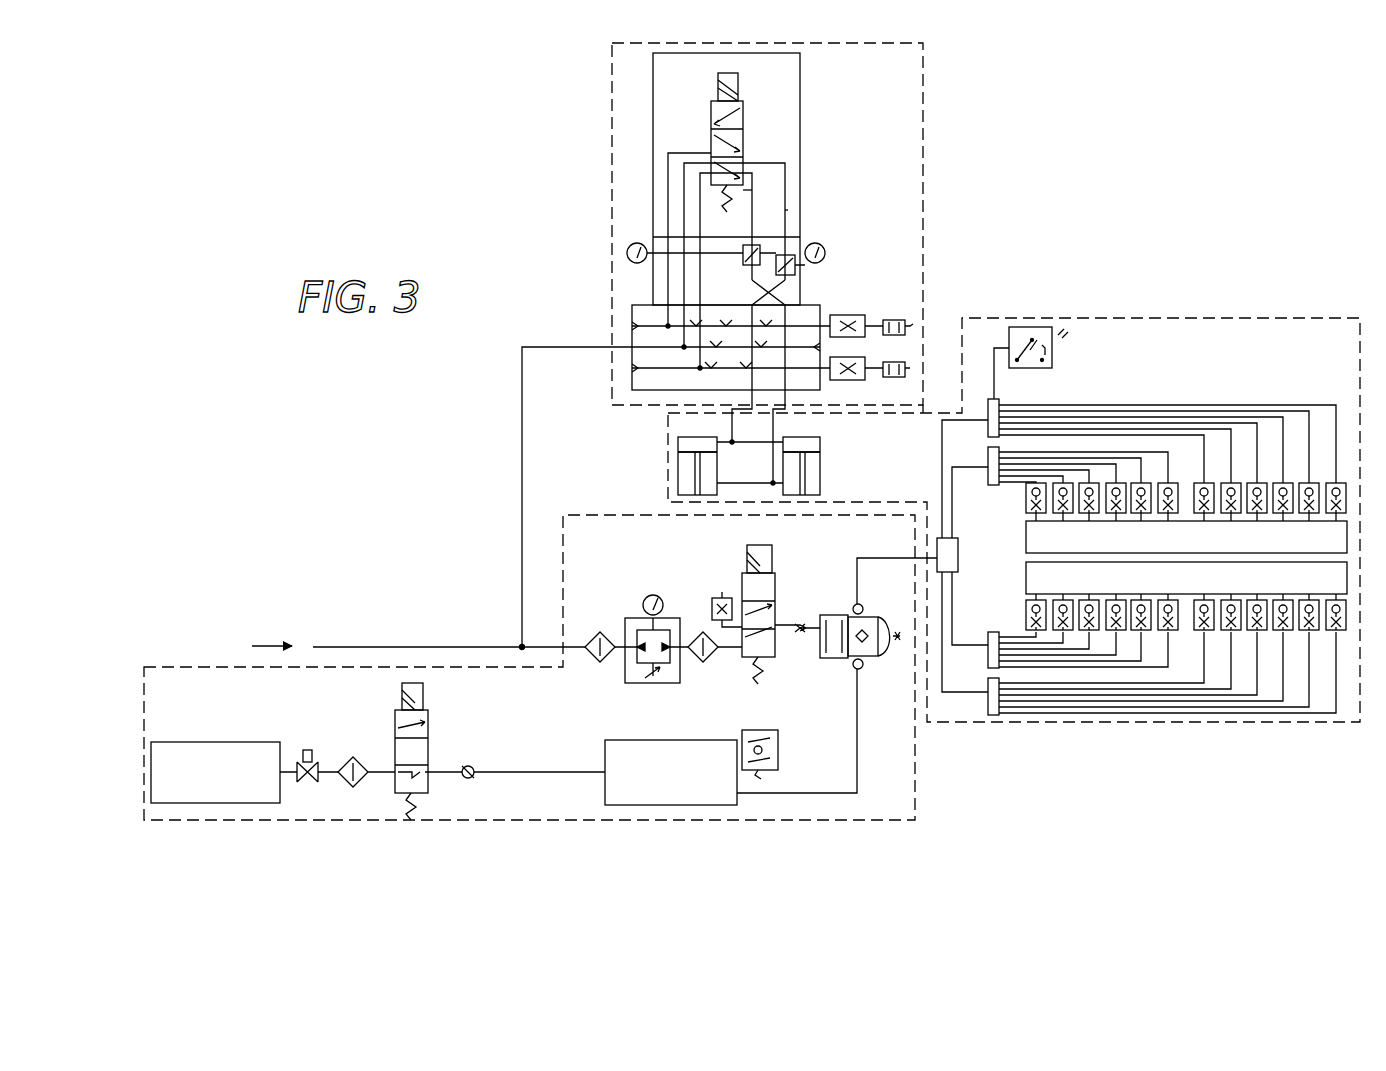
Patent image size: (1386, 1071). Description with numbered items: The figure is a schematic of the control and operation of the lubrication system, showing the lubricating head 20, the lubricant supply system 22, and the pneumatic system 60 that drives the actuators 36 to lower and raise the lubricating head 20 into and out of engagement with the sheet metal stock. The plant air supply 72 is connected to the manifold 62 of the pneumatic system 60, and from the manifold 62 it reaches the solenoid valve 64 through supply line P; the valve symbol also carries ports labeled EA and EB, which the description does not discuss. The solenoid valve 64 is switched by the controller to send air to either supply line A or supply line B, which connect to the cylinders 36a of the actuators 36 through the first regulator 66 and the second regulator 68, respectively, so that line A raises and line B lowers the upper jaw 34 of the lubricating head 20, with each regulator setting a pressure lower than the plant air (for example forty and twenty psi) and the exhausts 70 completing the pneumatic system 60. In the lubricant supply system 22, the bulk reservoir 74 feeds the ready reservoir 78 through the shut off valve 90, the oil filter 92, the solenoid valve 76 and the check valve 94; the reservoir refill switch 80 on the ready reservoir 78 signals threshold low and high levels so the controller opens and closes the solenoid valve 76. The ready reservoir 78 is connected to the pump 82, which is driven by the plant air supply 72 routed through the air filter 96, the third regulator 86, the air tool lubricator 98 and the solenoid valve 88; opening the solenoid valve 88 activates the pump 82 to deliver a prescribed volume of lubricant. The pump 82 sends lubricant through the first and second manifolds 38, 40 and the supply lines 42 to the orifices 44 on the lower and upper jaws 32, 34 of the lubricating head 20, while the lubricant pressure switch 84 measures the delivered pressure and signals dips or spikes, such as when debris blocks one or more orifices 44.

The lubricating head 20 is at (1195, 318).
The lubricant supply system 22 is at (422, 666).
The lower jaw 32 is at (1186, 578).
The upper jaw 34 is at (1186, 537).
The actuators 36 is at (670, 488).
The cylinders 36a is at (678, 458).
The first manifold 38 is at (958, 558).
The second manifold 40 is at (988, 449).
The supply lines 42 is at (1336, 418).
The orifices 44 is at (1231, 500).
The pneumatic system 60 is at (923, 100).
The manifold 62 is at (632, 330).
The solenoid valve 64 is at (743, 110).
The first regulator 66 is at (627, 253).
The second regulator 68 is at (822, 247).
The exhausts 70 is at (896, 356).
The plant air supply 72 is at (268, 646).
The bulk reservoir 74 is at (213, 742).
The solenoid valve 76 is at (428, 720).
The ready reservoir 78 is at (632, 740).
The reservoir refill switch 80 is at (778, 750).
The pump 82 is at (856, 615).
The lubricant pressure switch 84 is at (1040, 368).
The third regulator 86 is at (660, 594).
The solenoid valve 88 is at (775, 596).
The shut off valve 90 is at (310, 762).
The oil filter 92 is at (356, 758).
The check valve 94 is at (472, 767).
The air filter 96 is at (602, 632).
The air tool lubricator 98 is at (705, 655).
The supply line P is at (668, 167).
The exhaust port B EB is at (684, 183).
The exhaust port A EA is at (700, 205).
The supply line A is at (752, 190).
The supply line B is at (785, 210).